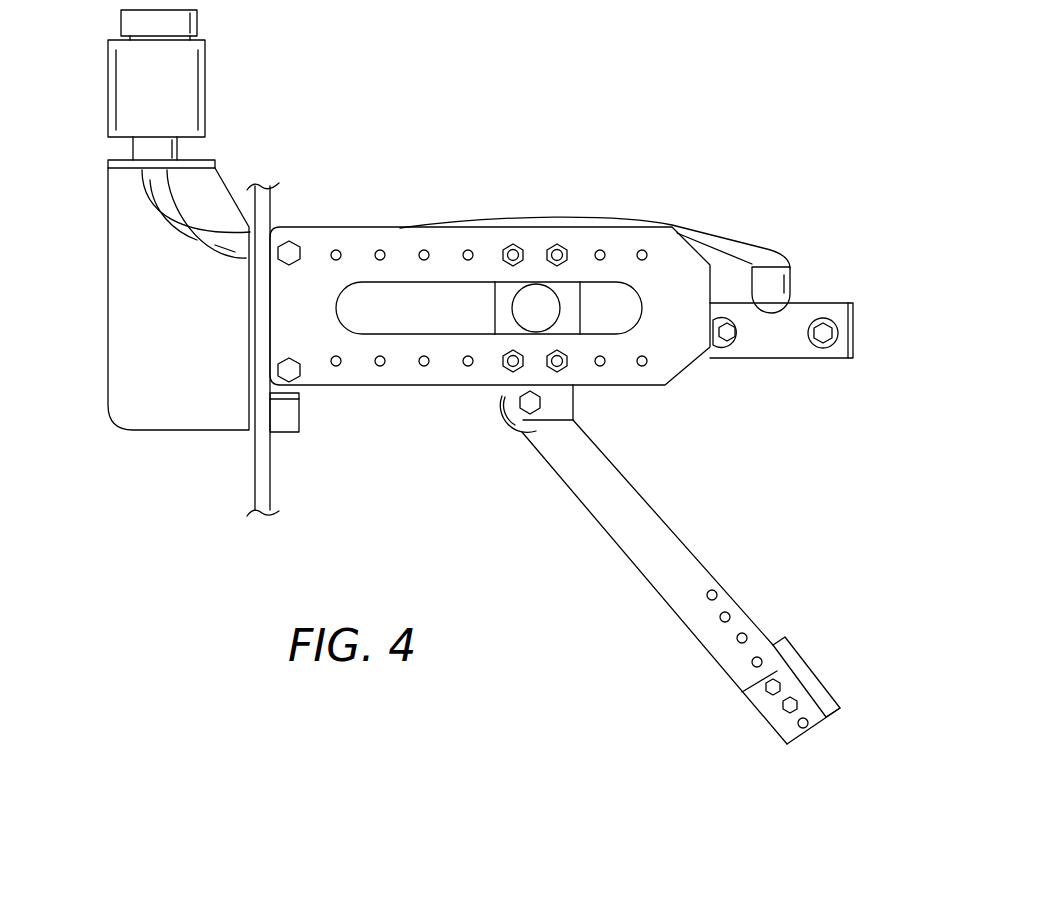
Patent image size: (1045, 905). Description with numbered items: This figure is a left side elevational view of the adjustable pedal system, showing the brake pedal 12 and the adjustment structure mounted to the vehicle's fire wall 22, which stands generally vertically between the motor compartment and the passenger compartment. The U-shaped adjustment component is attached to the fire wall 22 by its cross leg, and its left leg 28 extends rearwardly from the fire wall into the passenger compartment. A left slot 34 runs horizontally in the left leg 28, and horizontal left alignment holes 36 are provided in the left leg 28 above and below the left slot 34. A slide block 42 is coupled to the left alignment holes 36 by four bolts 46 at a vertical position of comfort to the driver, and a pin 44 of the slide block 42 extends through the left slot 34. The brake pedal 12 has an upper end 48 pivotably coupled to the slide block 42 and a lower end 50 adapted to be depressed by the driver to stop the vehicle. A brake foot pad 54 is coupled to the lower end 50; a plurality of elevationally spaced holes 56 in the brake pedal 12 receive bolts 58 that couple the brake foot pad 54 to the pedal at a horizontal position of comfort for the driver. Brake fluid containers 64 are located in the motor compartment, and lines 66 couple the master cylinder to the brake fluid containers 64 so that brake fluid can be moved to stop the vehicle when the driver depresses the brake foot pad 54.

The brake pedal 12 is at (700, 543).
The fire wall 22 is at (255, 458).
The left leg 28 is at (660, 257).
The left slot 34 is at (407, 303).
The left alignment holes 36 is at (340, 250).
The slide block 42 is at (500, 297).
The pin 44 is at (552, 310).
The bolts 46 is at (557, 243).
The upper end 48 is at (516, 432).
The lower end 50 is at (790, 747).
The brake foot pad 54 is at (811, 668).
The elevationally spaced holes 56 is at (727, 642).
The bolts 58 is at (782, 706).
The brake fluid containers 64 is at (170, 102).
The lines 66 is at (178, 236).